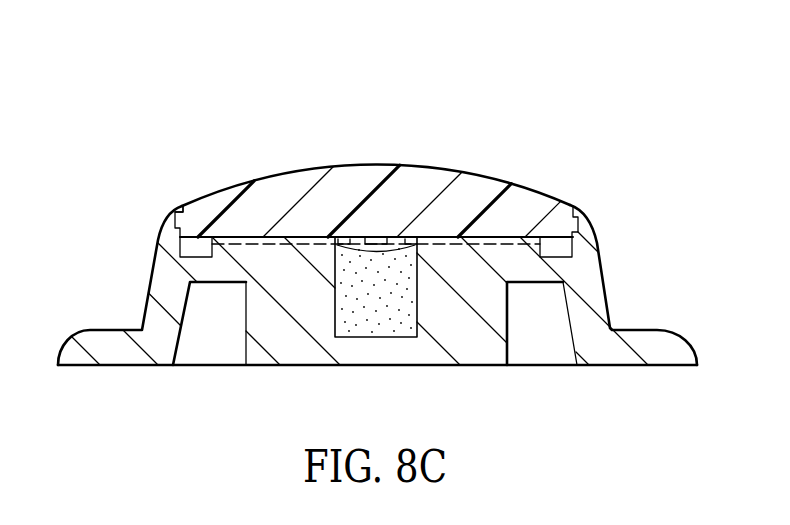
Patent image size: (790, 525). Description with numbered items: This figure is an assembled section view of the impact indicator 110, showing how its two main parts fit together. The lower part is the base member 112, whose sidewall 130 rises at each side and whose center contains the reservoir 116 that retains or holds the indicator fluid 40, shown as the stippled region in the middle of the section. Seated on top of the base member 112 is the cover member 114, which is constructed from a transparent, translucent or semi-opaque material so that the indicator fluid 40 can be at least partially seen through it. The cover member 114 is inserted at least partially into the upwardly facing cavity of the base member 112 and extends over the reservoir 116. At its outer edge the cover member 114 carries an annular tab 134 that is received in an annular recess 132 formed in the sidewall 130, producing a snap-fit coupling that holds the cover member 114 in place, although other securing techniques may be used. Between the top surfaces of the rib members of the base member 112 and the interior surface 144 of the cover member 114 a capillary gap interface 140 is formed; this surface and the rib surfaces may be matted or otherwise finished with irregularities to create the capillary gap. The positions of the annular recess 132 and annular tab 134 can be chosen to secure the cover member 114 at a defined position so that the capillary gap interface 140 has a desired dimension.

The impact indicator 110 is at (107, 70).
The base member 112 is at (613, 367).
The cover member 114 is at (538, 185).
The reservoir 116 is at (407, 337).
The sidewall 130 is at (145, 313).
The annular recess 132 is at (174, 218).
The annular tab 134 is at (194, 210).
The capillary gap interface 140 is at (303, 237).
The interior surface 144 is at (252, 238).
The indicator fluid 40 is at (367, 327).